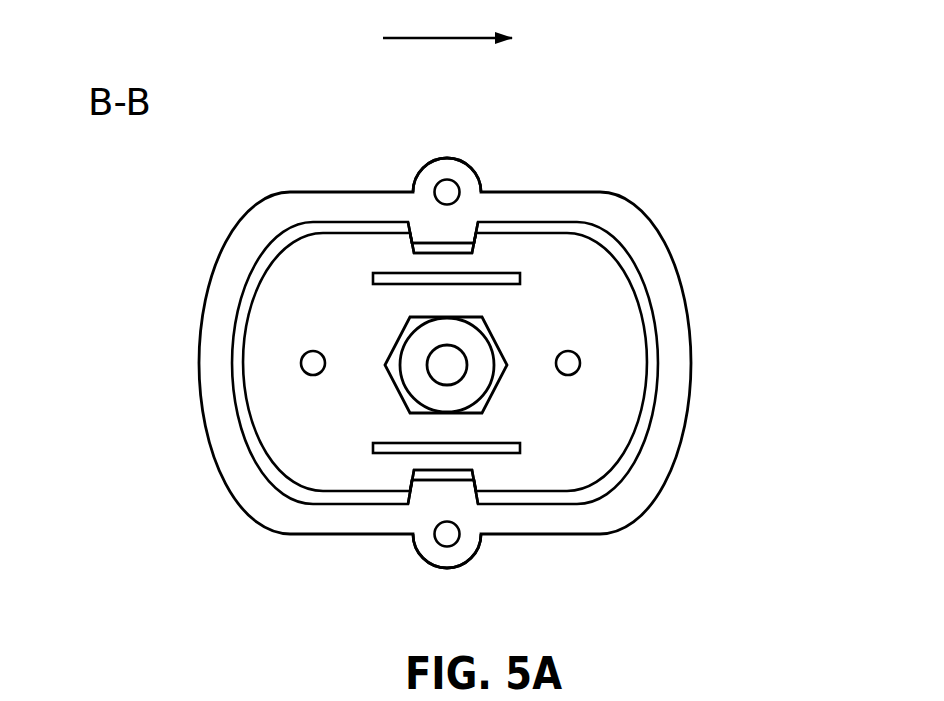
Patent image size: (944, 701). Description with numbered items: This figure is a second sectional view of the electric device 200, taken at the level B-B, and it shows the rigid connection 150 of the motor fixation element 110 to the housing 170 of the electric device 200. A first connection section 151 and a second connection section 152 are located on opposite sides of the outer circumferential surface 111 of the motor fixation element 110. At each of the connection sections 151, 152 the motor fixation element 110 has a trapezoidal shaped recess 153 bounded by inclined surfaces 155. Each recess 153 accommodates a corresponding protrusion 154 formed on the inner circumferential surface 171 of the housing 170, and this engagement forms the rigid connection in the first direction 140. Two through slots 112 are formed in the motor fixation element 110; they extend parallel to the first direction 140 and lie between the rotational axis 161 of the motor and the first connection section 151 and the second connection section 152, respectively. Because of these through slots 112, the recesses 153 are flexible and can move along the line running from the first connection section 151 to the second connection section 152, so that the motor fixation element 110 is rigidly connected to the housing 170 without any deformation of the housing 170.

The electric device 200 is at (237, 85).
The first direction 140 is at (447, 19).
The rigid connection 150 is at (400, 178).
The first connection section 151 is at (500, 177).
The second connection section 152 is at (493, 543).
The housing 170 is at (615, 215).
The inner circumferential surface 171 is at (551, 221).
The motor fixation element 110 is at (577, 258).
The outer circumferential surface 111 is at (636, 288).
The through slots 112 is at (521, 279).
The trapezoidal shaped recess 153 is at (473, 253).
The protrusion 154 is at (420, 230).
The inclined surfaces 155 is at (473, 485).
The rotational axis 161 is at (438, 358).